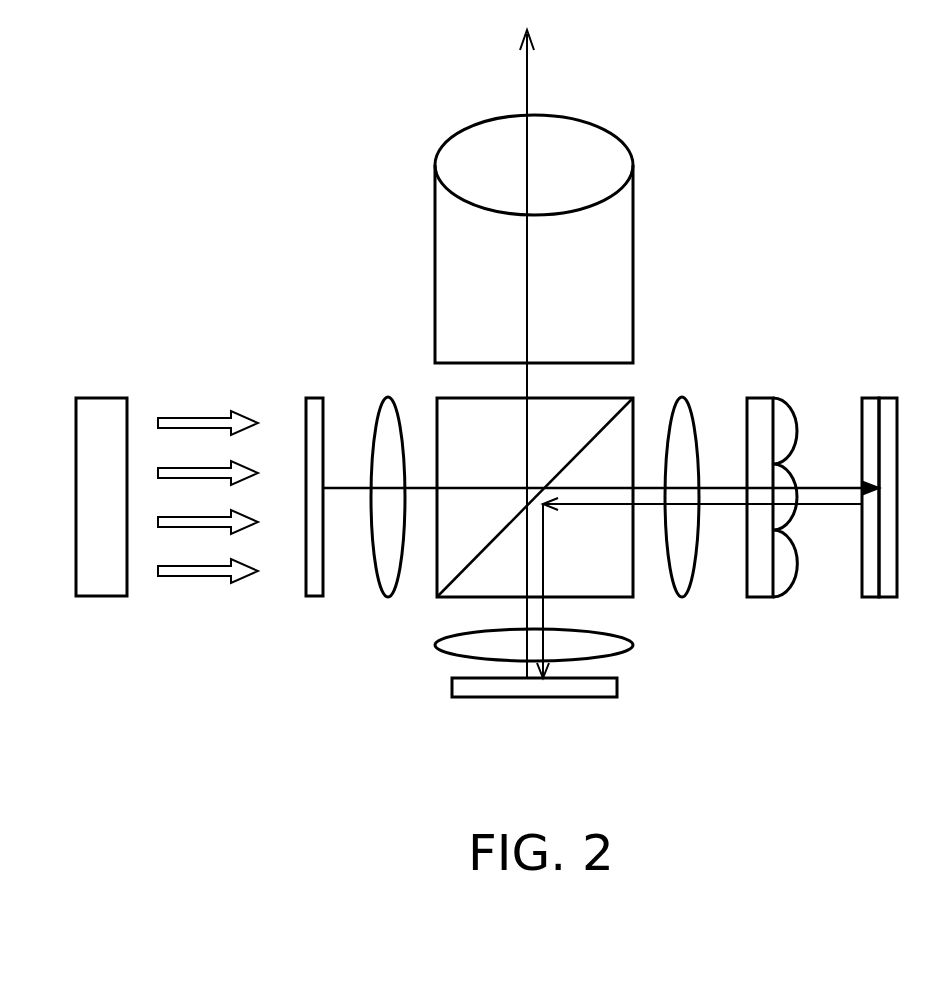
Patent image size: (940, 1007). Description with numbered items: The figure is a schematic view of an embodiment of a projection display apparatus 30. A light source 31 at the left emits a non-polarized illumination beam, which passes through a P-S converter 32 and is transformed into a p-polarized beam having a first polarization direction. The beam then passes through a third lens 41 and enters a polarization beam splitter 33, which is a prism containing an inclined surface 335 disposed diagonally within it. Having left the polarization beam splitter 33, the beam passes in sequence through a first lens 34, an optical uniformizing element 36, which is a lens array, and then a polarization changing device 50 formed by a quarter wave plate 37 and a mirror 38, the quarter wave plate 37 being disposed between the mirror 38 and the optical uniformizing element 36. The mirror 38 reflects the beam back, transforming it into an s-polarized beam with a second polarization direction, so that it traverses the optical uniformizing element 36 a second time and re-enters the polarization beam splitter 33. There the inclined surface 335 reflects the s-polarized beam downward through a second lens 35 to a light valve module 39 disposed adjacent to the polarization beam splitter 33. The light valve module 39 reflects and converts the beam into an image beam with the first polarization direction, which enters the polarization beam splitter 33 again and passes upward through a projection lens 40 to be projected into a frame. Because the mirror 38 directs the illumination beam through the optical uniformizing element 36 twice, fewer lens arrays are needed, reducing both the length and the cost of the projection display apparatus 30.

The projection display apparatus 30 is at (113, 65).
The light source 31 is at (102, 597).
The P-S converter 32 is at (312, 597).
The third lens 41 is at (388, 597).
The polarization beam splitter 33 is at (571, 518).
The inclined surface 335 is at (618, 408).
The projection lens 40 is at (587, 117).
The second lens 35 is at (630, 655).
The light valve module 39 is at (533, 697).
The first lens 34 is at (682, 597).
The optical uniformizing element 36 is at (757, 597).
The quarter wave plate 37 is at (870, 597).
The mirror 38 is at (885, 597).
The polarization changing device 50 is at (877, 568).